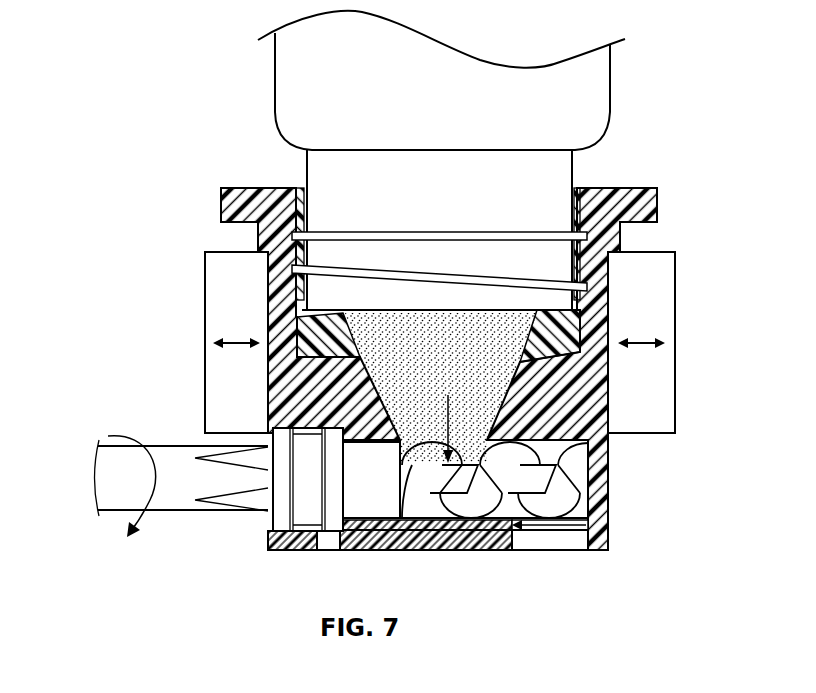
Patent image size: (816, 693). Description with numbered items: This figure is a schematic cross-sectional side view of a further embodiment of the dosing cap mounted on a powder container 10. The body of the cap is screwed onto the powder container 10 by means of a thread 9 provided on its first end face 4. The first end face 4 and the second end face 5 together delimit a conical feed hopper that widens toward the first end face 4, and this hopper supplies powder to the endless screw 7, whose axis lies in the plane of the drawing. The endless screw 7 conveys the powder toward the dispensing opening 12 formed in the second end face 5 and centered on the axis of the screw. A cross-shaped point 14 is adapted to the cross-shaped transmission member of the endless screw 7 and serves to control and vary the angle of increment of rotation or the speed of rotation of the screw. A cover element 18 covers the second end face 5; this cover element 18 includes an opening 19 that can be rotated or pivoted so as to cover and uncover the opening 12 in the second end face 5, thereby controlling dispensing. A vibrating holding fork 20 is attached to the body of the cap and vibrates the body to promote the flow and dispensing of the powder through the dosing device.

The powder container 10 is at (611, 92).
The first end face 4 is at (614, 188).
The thread 9 is at (326, 266).
The vibrating holding fork 20 is at (205, 342).
The endless screw 7 is at (574, 473).
The cross-shaped point 14 is at (118, 498).
The second end face 5 is at (395, 520).
The cover element 18 is at (432, 535).
The opening 19 is at (534, 533).
The opening 12 is at (580, 528).